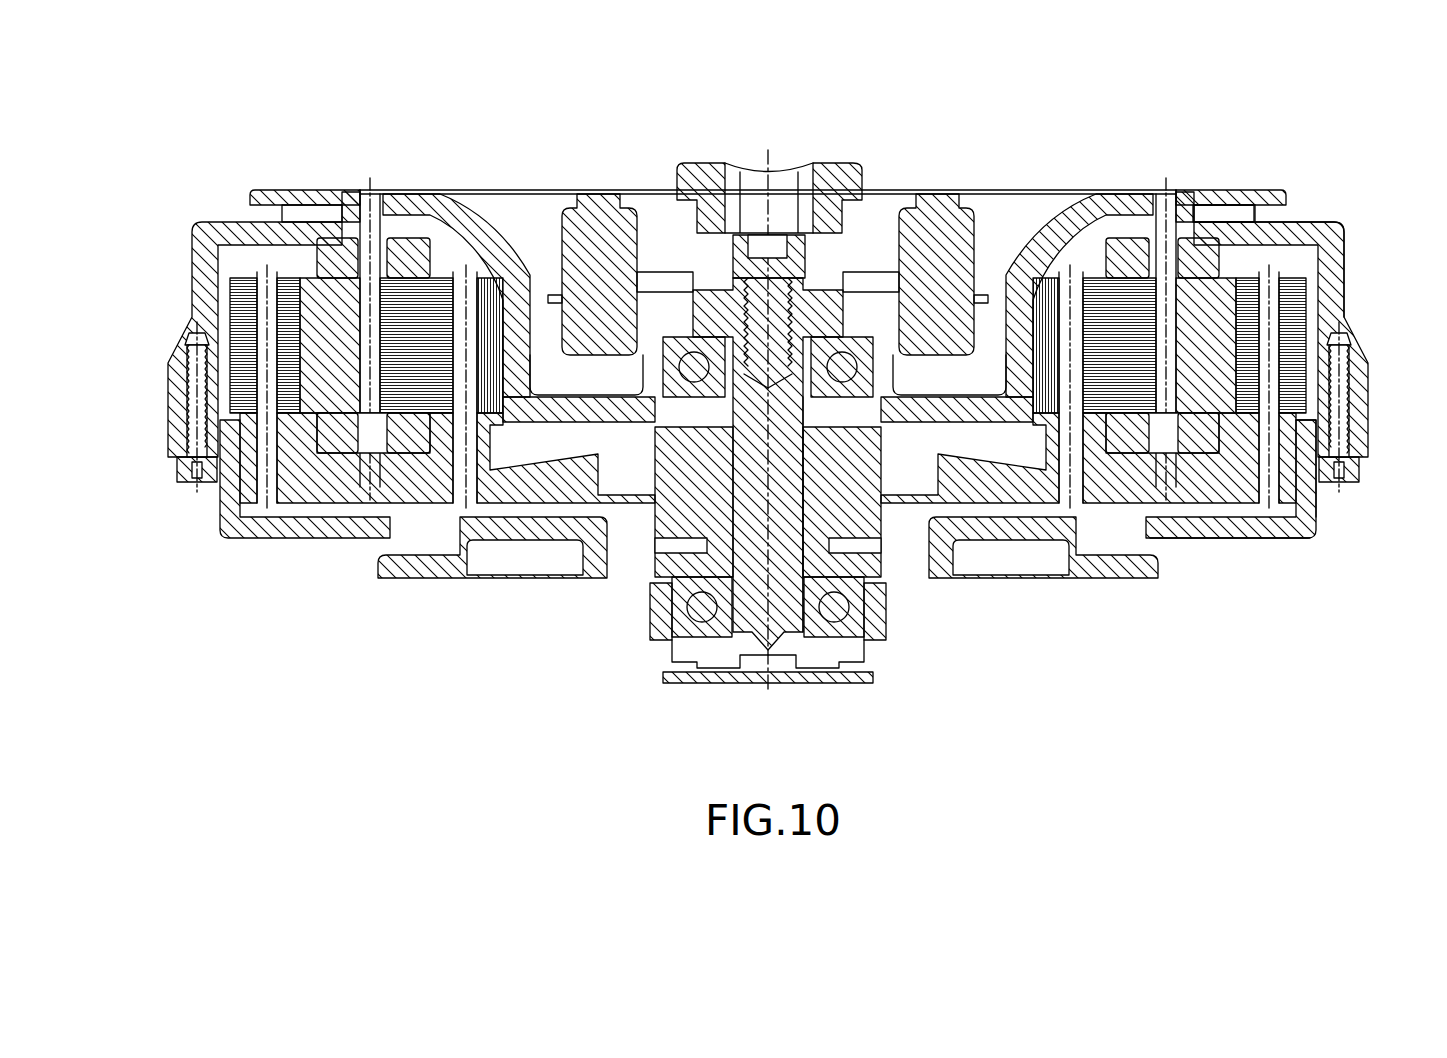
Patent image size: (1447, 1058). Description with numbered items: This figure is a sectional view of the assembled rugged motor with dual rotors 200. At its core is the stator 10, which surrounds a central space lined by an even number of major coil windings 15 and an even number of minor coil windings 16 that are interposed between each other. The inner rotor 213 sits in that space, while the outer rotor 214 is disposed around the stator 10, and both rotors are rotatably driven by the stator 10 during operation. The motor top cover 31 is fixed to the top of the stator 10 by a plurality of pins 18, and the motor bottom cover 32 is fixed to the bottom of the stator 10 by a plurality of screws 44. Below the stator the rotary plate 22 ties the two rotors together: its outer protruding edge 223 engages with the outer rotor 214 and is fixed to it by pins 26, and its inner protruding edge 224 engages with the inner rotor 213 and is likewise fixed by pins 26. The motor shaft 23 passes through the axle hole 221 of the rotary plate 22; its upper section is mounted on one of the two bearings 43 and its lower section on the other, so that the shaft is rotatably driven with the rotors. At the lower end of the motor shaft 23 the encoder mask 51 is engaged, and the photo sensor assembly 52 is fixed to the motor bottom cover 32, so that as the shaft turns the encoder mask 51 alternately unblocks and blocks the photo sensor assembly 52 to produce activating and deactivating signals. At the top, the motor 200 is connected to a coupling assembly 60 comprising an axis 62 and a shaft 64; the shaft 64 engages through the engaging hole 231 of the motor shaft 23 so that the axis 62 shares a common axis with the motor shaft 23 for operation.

The rugged motor with dual rotors 200 is at (180, 296).
The stator 10 is at (1296, 240).
The motor top cover 31 is at (1330, 262).
The outer rotor 214 is at (1293, 303).
The screws 44 is at (1337, 387).
The pins 18 is at (1200, 208).
The minor coil windings 16 is at (1235, 228).
The major coil windings 15 is at (1140, 232).
The inner rotor 213 is at (1102, 268).
The inner protruding edge 224 is at (1150, 487).
The pins 26 is at (1305, 524).
The motor bottom cover 32 is at (1258, 523).
The outer protruding edge 223 is at (1300, 458).
The engaging hole 231 is at (662, 210).
The rotary plate 22 is at (887, 483).
The axle hole 221 is at (740, 497).
The motor shaft 23 is at (803, 533).
The shaft 64 is at (835, 185).
The coupling assembly 60 is at (853, 163).
The axis 62 is at (788, 195).
The bearings 43 is at (885, 345).
The encoder mask 51 is at (715, 673).
The photo sensor assembly 52 is at (690, 675).